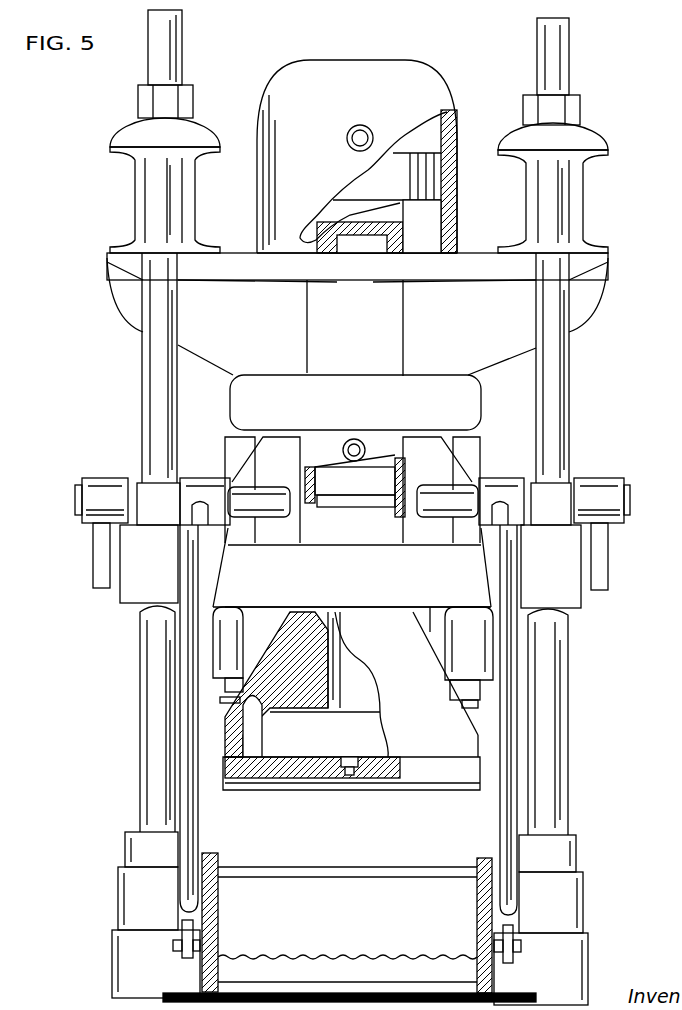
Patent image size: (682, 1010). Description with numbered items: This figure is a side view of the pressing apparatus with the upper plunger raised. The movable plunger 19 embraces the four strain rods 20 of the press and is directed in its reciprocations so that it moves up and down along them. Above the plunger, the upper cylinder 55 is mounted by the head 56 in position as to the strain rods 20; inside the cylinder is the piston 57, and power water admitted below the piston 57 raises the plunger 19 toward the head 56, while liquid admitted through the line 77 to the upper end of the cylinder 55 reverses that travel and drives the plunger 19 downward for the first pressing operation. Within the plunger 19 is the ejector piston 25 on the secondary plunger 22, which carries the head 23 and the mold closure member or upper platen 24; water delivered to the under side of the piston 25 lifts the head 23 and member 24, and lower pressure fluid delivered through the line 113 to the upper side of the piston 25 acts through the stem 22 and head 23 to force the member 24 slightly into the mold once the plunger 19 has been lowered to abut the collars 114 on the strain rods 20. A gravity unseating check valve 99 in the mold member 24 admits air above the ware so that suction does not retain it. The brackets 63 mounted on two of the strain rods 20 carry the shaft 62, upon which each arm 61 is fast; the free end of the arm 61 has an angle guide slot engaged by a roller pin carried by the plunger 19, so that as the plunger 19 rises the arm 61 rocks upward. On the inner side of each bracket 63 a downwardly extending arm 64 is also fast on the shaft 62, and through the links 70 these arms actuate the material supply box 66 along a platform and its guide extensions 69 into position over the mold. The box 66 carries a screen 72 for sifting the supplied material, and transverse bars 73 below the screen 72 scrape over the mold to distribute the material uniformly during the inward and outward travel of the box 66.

The movable plunger 19 is at (120, 599).
The strain rods 20 is at (141, 684).
The secondary plunger 22 is at (326, 652).
The head 23 is at (263, 733).
The mold closure member 24 is at (325, 790).
The piston 25 is at (306, 482).
The upper cylinder 55 is at (415, 62).
The head 56 is at (478, 411).
The piston 57 is at (420, 158).
The arm 61 is at (92, 556).
The shaft 62 is at (80, 498).
The bracket 63 is at (144, 491).
The downwardly extending arm 64 is at (182, 773).
The material supply box 66 is at (220, 857).
The guide extensions 69 is at (393, 992).
The link 70 is at (186, 960).
The screen 72 is at (318, 956).
The transverse bars 73 is at (263, 980).
The line 77 is at (350, 129).
The gravity unseating check valve 99 is at (358, 760).
The line 113 is at (360, 438).
The collars 114 is at (125, 841).